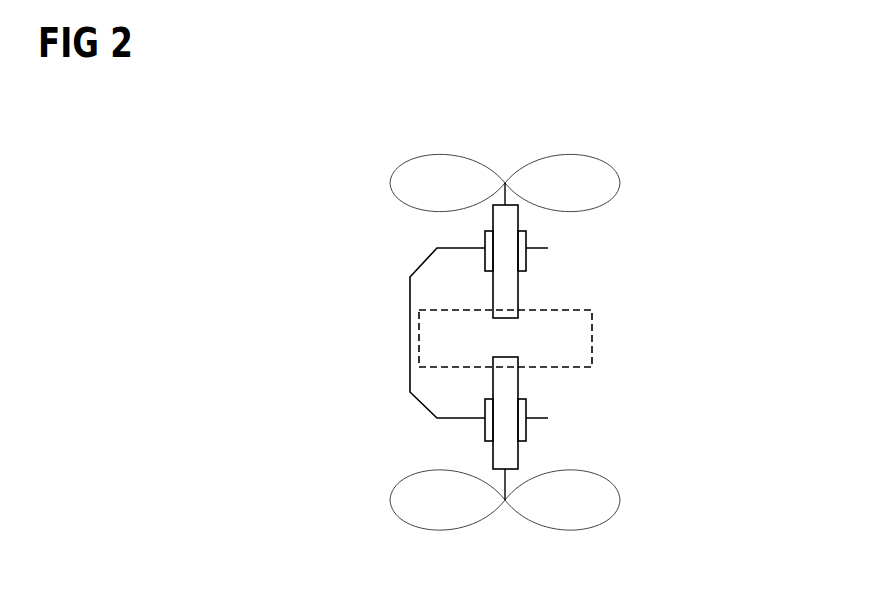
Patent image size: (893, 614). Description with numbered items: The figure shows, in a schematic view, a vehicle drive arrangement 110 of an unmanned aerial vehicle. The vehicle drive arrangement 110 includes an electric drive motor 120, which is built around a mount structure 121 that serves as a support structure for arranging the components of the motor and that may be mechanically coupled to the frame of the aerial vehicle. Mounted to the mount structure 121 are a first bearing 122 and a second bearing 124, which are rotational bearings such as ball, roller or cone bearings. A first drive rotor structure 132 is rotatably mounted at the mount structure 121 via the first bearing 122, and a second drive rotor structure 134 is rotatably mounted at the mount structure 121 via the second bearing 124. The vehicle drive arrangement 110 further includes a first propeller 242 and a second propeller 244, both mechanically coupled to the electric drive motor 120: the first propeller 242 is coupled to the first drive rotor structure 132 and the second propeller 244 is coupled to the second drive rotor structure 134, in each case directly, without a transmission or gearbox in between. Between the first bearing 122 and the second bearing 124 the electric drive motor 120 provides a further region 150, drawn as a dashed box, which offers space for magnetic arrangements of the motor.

The vehicle drive arrangement 110 is at (525, 86).
The electric drive motor 120 is at (670, 218).
The mount structure 121 is at (400, 304).
The first bearing 122 is at (535, 262).
The second bearing 124 is at (535, 433).
The first drive rotor structure 132 is at (517, 285).
The second drive rotor structure 134 is at (517, 388).
The further region 150 is at (601, 341).
The first propeller 242 is at (597, 183).
The second propeller 244 is at (603, 507).